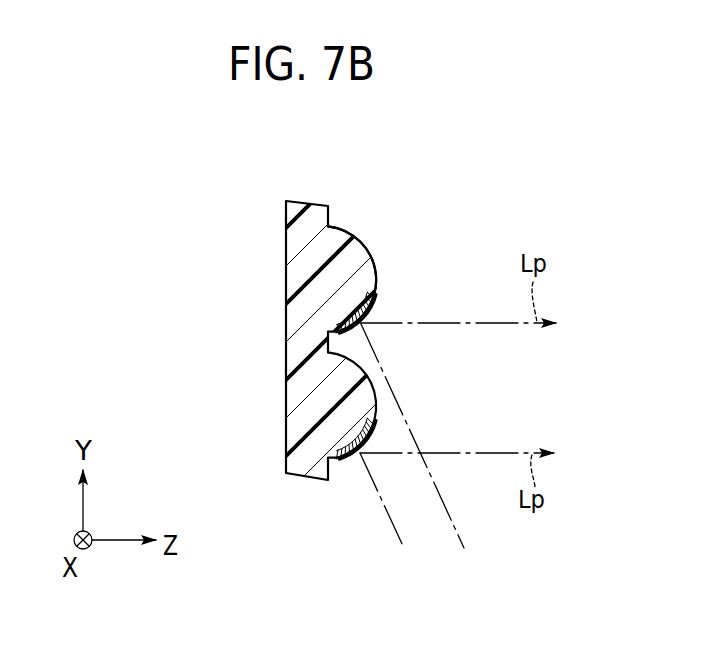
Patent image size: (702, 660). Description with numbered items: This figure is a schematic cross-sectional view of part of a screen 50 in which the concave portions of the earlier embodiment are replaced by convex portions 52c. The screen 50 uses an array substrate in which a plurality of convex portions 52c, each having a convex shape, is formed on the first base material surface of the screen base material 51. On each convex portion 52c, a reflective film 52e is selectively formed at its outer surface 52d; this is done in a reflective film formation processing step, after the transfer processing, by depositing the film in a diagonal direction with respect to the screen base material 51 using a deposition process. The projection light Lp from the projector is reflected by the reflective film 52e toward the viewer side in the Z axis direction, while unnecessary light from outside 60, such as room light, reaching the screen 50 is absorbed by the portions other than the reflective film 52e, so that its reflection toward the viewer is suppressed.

The screen 50 is at (318, 206).
The screen base material 51 is at (307, 340).
The unnecessary light from outside 60 is at (416, 181).
The convex portion 52c is at (365, 247).
The outer surface 52d is at (375, 265).
The reflective film 52e is at (372, 299).